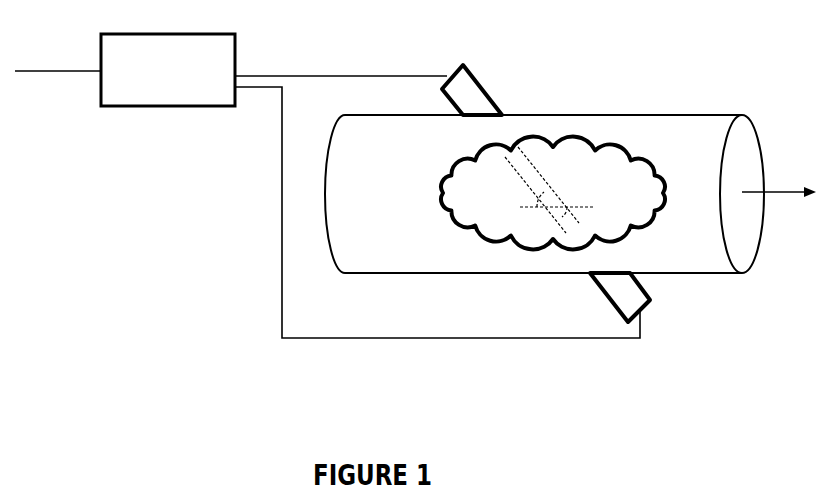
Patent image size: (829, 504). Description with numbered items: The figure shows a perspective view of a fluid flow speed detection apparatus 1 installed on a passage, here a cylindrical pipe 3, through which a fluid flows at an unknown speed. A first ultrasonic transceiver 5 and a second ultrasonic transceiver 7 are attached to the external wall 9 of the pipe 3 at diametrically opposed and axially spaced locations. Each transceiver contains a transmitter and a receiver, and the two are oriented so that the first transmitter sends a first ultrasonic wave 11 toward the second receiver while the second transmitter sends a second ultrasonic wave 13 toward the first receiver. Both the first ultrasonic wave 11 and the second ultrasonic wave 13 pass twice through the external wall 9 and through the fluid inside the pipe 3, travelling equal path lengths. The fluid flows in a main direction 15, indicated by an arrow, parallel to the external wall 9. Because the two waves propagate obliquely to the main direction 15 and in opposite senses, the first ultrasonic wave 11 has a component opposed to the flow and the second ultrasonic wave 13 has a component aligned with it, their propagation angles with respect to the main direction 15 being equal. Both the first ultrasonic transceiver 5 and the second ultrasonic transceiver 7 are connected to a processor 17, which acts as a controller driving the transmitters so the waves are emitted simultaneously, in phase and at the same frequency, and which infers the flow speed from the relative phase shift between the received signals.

The fluid flow speed detection apparatus 1 is at (199, 309).
The cylindrical pipe 3 is at (609, 115).
The first ultrasonic transceiver 5 is at (628, 297).
The second ultrasonic transceiver 7 is at (470, 97).
The external wall 9 is at (683, 114).
The first ultrasonic wave 11 is at (538, 176).
The second ultrasonic wave 13 is at (567, 228).
The main direction 15 is at (779, 185).
The processor 17 is at (166, 86).